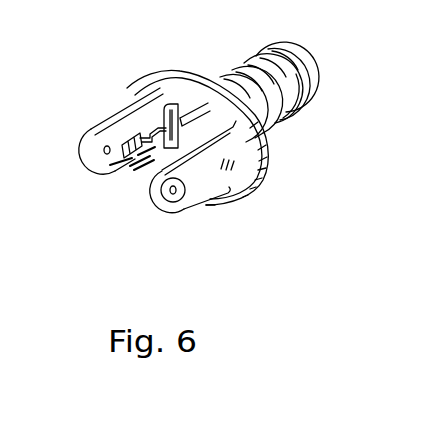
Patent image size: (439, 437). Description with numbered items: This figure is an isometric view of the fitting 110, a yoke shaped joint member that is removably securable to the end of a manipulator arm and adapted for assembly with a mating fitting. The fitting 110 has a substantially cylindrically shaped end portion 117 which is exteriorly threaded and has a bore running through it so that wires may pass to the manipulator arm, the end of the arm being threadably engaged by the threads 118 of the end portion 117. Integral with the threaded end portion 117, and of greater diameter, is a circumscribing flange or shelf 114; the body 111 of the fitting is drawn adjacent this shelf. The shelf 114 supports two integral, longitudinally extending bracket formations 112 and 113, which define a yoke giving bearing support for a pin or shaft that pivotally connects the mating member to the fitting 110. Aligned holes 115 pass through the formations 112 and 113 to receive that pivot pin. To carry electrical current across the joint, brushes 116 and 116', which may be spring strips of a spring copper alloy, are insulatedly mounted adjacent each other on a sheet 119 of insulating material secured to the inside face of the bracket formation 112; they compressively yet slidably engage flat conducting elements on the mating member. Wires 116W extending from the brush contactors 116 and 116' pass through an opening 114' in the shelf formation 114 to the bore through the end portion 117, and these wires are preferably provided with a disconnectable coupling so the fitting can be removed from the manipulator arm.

The fitting 110 is at (288, 192).
The plug body 111 is at (268, 150).
The bracket formation 112 is at (85, 163).
The bracket formation 113 is at (186, 204).
The circumscribing flange or shelf 114 is at (181, 91).
The opening 114' is at (142, 103).
The aligned holes 115 is at (172, 194).
The brush 116 is at (113, 184).
The brush 116' is at (126, 199).
The wires 116W is at (180, 120).
The cylindrically shaped end portion 117 is at (297, 90).
The threads 118 is at (285, 68).
The sheet of insulating material 119 is at (125, 143).